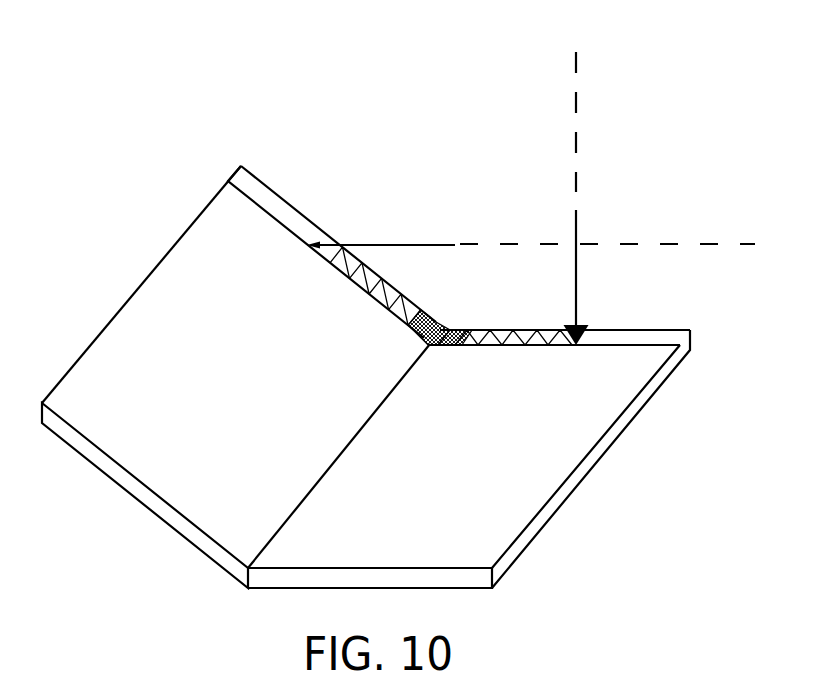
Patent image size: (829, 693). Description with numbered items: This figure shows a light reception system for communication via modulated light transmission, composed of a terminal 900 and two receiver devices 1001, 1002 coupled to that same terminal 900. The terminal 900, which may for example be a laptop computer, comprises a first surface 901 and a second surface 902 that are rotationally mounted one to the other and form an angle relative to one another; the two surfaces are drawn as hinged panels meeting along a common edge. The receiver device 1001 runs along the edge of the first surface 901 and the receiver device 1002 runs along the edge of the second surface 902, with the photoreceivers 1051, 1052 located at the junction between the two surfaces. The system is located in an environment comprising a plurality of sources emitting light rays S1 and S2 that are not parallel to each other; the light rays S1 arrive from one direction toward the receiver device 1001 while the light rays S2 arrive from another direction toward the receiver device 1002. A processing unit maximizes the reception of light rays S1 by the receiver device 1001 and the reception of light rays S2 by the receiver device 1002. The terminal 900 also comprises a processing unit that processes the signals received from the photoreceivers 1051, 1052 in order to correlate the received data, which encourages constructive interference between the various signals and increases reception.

The terminal 900 is at (375, 377).
The first surface 901 is at (141, 316).
The second surface 902 is at (544, 454).
The receiver device 1001 is at (303, 193).
The receiver device 1002 is at (643, 317).
The photoreceiver 1051 is at (442, 306).
The photoreceiver 1052 is at (467, 319).
The light rays S1 is at (551, 246).
The light rays S2 is at (576, 183).